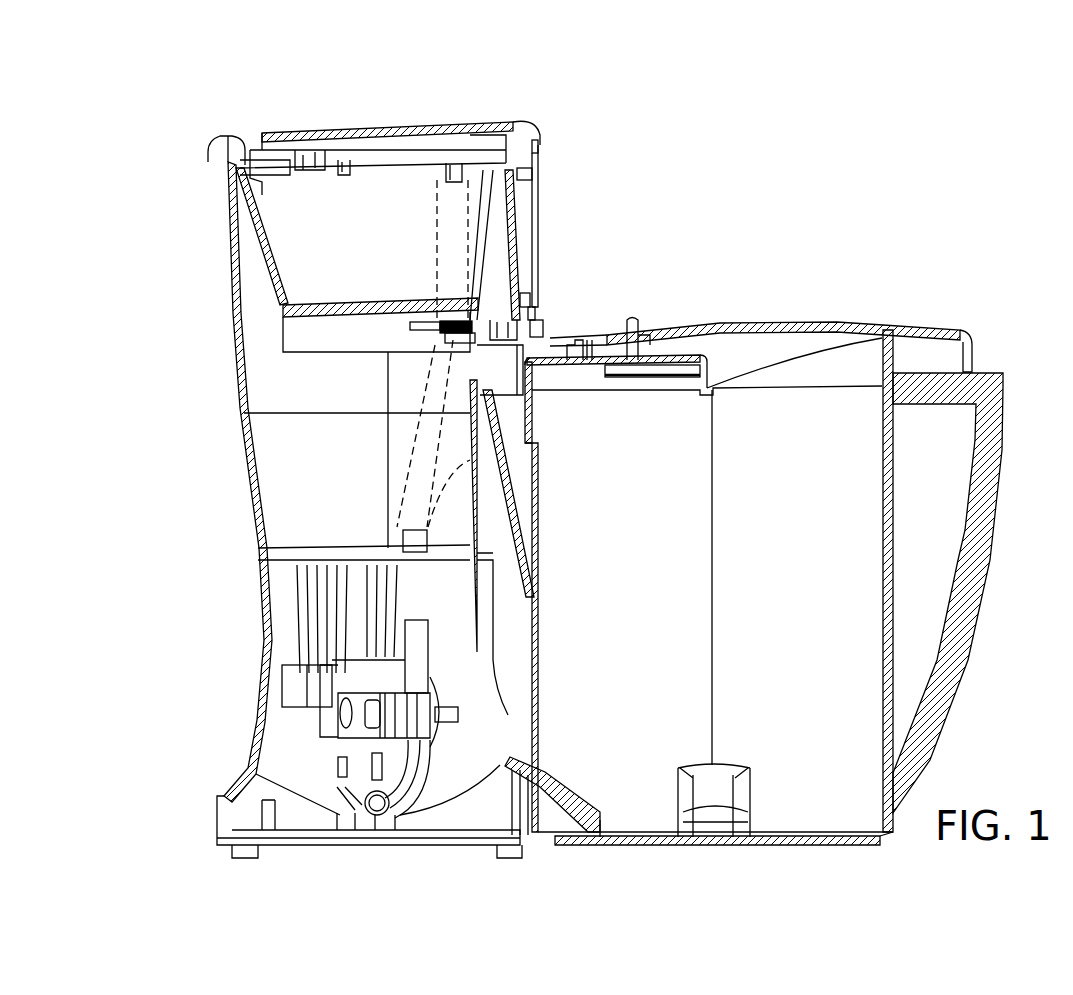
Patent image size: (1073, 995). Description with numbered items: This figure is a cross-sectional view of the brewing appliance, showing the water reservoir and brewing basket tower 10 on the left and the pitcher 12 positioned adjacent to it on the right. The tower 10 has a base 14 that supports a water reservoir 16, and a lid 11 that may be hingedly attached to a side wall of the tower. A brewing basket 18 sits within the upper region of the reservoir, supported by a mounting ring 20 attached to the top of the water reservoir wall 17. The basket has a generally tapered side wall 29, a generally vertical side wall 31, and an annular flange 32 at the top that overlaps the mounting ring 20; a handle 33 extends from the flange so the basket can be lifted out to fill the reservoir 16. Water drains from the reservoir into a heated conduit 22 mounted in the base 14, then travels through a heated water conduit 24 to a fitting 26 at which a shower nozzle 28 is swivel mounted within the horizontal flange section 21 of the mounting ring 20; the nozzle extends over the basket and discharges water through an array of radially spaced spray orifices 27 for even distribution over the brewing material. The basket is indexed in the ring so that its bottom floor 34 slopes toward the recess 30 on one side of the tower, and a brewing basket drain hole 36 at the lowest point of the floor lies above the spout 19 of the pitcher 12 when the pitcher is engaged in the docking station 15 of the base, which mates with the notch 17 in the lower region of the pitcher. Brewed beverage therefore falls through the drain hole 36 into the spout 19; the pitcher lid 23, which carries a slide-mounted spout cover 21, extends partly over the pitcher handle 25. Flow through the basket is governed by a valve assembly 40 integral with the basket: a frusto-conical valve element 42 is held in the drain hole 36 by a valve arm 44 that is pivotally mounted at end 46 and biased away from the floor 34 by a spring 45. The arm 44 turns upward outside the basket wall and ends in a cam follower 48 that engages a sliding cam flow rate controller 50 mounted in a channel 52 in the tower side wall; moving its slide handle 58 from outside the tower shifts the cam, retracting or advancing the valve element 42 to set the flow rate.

The water reservoir and brewing basket tower 10 is at (232, 407).
The lid 11 is at (420, 124).
The pitcher 12 is at (820, 310).
The base 14 is at (262, 622).
The docking station 15 is at (578, 850).
The water reservoir 16 is at (252, 495).
The water reservoir wall / notch 17 is at (540, 146).
The brewing basket 18 is at (258, 250).
The spout 19 is at (500, 462).
The mounting ring 20 is at (242, 185).
The horizontal flange section / spout cover 21 is at (632, 318).
The heated conduit 22 is at (405, 808).
The pitcher lid 23 is at (722, 325).
The heated water conduit 24 is at (436, 506).
The pitcher handle 25 is at (990, 432).
The fitting 26 is at (524, 176).
The spray orifices 27 is at (345, 172).
The shower nozzle 28 is at (372, 150).
The tapered side wall 29 is at (278, 290).
The recess 30 is at (493, 580).
The vertical side wall 31 is at (518, 240).
The annular flange 32 is at (518, 145).
The handle 33 is at (303, 160).
The bottom floor 34 is at (362, 320).
The brewing basket drain hole 36 is at (512, 300).
The valve assembly 40 is at (450, 345).
The frusto-conical valve element 42 is at (500, 370).
The valve arm 44 is at (445, 340).
The spring 45 is at (448, 320).
The end 46 is at (412, 328).
The cam follower 48 is at (528, 293).
The sliding cam flow rate controller 50 is at (542, 328).
The channel 52 is at (534, 314).
The slide handle 58 is at (598, 340).